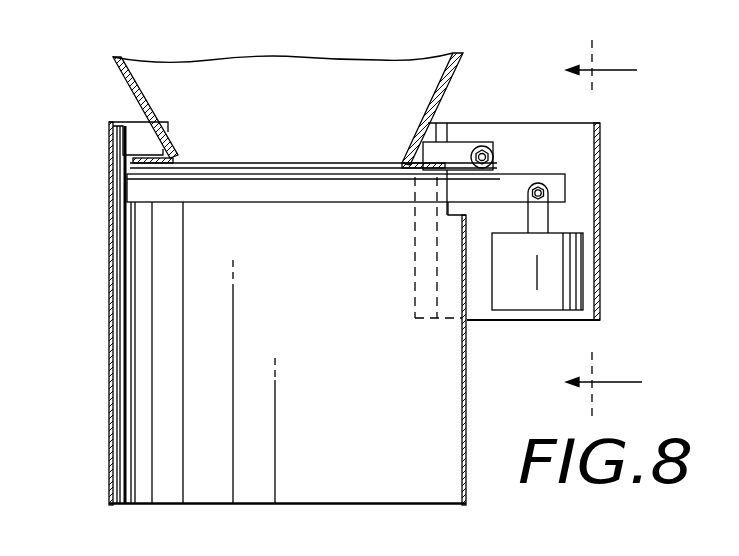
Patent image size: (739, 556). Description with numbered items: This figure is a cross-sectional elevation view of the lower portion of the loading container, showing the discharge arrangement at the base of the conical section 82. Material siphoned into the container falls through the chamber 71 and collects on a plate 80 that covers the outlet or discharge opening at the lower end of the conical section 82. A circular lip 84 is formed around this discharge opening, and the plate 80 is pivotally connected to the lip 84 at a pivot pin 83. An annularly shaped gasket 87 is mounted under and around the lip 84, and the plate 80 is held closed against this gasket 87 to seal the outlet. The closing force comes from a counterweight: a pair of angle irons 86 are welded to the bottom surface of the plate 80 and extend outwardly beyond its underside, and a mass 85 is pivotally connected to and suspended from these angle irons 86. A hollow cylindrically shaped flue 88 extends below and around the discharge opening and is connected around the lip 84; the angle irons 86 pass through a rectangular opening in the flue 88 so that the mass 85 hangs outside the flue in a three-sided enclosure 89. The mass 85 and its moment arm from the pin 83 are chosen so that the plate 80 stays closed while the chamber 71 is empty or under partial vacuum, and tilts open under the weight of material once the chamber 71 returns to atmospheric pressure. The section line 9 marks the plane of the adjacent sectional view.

The chamber 71 is at (195, 85).
The conical section 82 is at (452, 78).
The circular lip 84 is at (167, 148).
The plate 80 is at (282, 172).
The annularly shaped gasket 87 is at (372, 165).
The pivot pin 83 is at (491, 150).
The three-sided enclosure 89 is at (603, 160).
The angle irons 86 is at (310, 194).
The mass 85 is at (543, 305).
The flue 88 is at (110, 322).
The section line 9- 9 is at (604, 229).